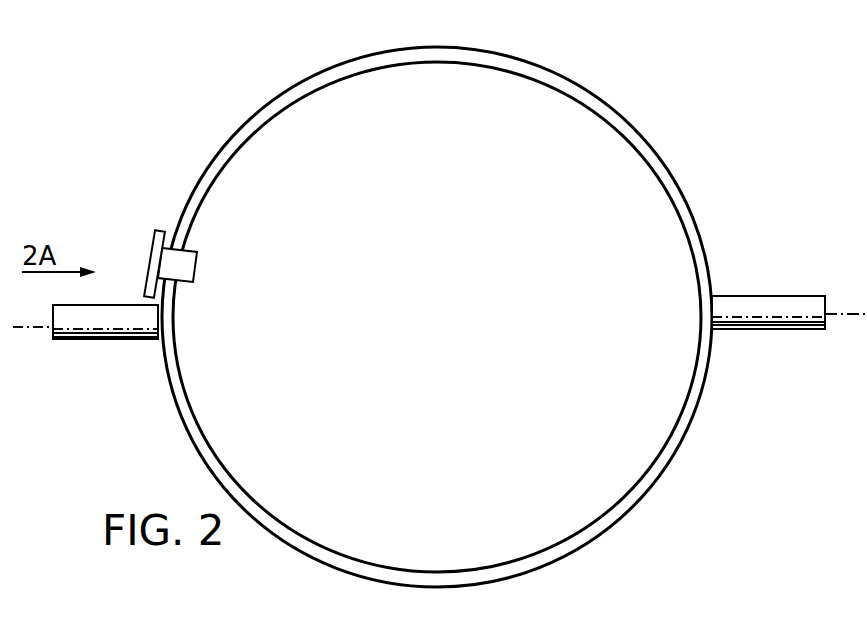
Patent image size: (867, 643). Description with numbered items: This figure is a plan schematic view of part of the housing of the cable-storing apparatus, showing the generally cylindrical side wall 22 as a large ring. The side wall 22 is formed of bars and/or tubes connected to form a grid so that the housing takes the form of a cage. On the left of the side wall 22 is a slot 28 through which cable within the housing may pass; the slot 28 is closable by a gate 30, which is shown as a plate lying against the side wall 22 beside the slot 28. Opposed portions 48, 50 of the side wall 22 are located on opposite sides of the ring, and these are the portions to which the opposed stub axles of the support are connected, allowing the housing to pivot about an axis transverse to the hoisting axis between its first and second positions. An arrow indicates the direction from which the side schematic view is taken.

The side wall 22 is at (672, 462).
The slot 28 is at (188, 267).
The gate 30 is at (155, 252).
The portion of the housing side wall 48 is at (690, 326).
The portion of the housing side wall 50 is at (186, 332).